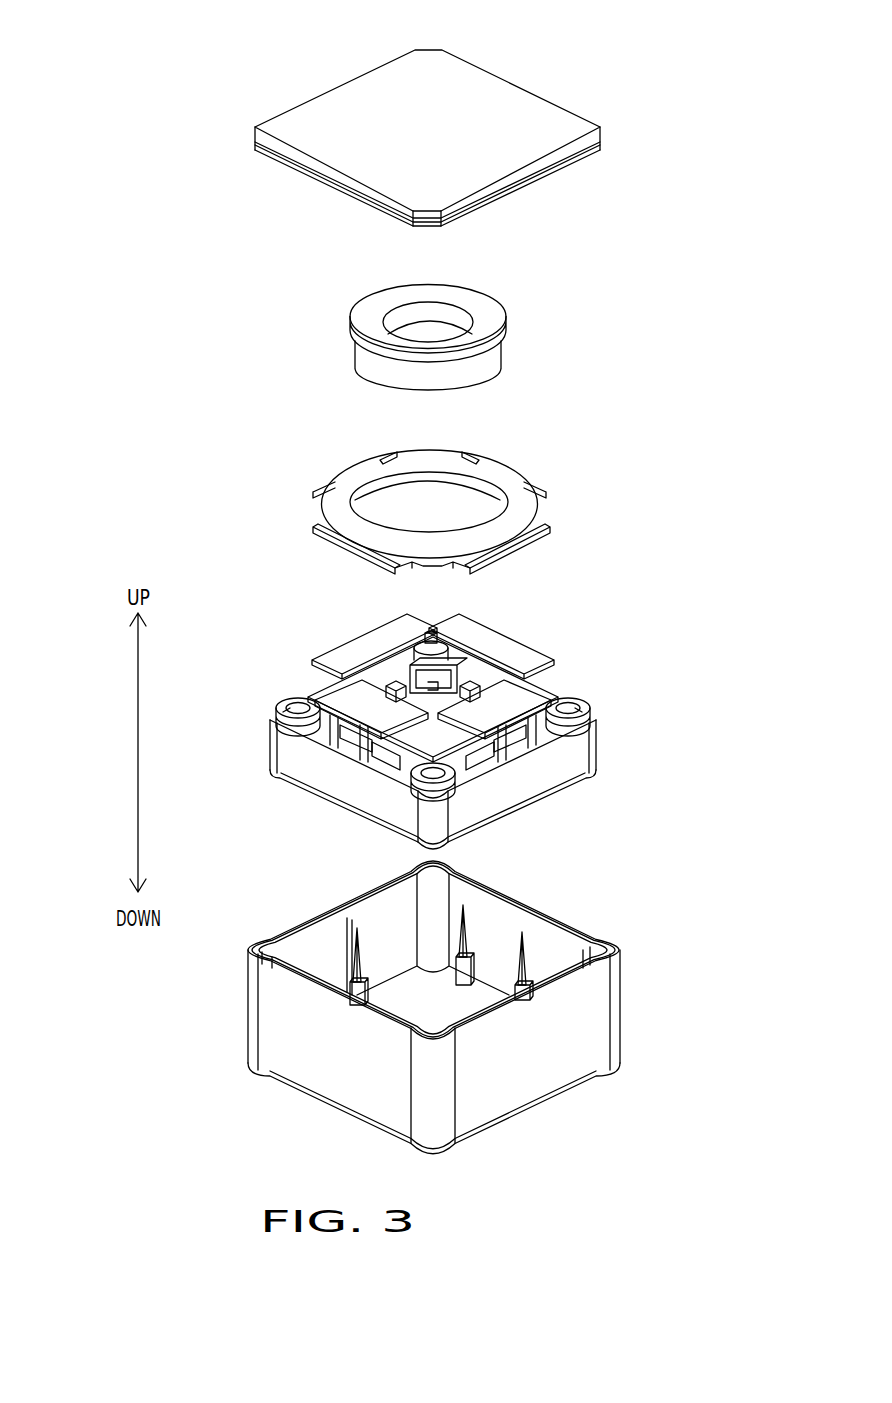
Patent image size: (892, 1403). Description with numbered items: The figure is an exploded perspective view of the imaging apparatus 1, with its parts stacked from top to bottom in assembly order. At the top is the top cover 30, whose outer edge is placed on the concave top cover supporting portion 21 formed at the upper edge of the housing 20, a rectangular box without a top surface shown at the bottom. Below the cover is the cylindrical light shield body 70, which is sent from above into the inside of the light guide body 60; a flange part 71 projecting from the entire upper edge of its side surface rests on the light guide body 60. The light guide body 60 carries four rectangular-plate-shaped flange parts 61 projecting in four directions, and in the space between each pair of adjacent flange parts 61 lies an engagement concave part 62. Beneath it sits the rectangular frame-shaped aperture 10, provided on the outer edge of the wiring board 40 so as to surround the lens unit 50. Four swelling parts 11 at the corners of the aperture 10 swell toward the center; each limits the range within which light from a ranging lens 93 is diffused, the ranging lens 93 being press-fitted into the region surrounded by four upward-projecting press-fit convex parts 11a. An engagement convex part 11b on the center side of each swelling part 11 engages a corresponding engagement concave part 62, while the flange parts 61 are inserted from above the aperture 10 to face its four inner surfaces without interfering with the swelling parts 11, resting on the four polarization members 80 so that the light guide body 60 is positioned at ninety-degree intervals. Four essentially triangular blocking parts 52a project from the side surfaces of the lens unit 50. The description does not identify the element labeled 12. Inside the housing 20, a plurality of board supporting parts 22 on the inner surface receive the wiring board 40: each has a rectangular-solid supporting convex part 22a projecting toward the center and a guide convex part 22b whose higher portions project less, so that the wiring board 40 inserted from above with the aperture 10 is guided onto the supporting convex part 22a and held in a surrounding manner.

The imaging apparatus 1 is at (248, 76).
The top cover 30 is at (393, 72).
The light shield body 70 is at (332, 331).
The flange part 71 is at (497, 315).
The light guide body 60 is at (307, 514).
The flange parts 61 is at (325, 483).
The engagement concave parts 62 is at (428, 564).
The aperture 10 is at (254, 749).
The wiring board 40 is at (275, 773).
The ranging lenses 93 is at (432, 633).
The lens unit 50 is at (527, 660).
The polarization members 80 is at (332, 652).
The support 12 is at (395, 680).
The swelling parts 11 is at (407, 660).
The press-fit convex parts 11a is at (427, 630).
The engagement convex part 11b is at (433, 677).
The blocking parts 52a is at (388, 755).
The housing 20 is at (294, 907).
The top cover supporting portion 21 is at (547, 912).
The board supporting parts 22 is at (162, 989).
The guide convex part 22b is at (352, 968).
The supporting convex part 22a is at (360, 996).